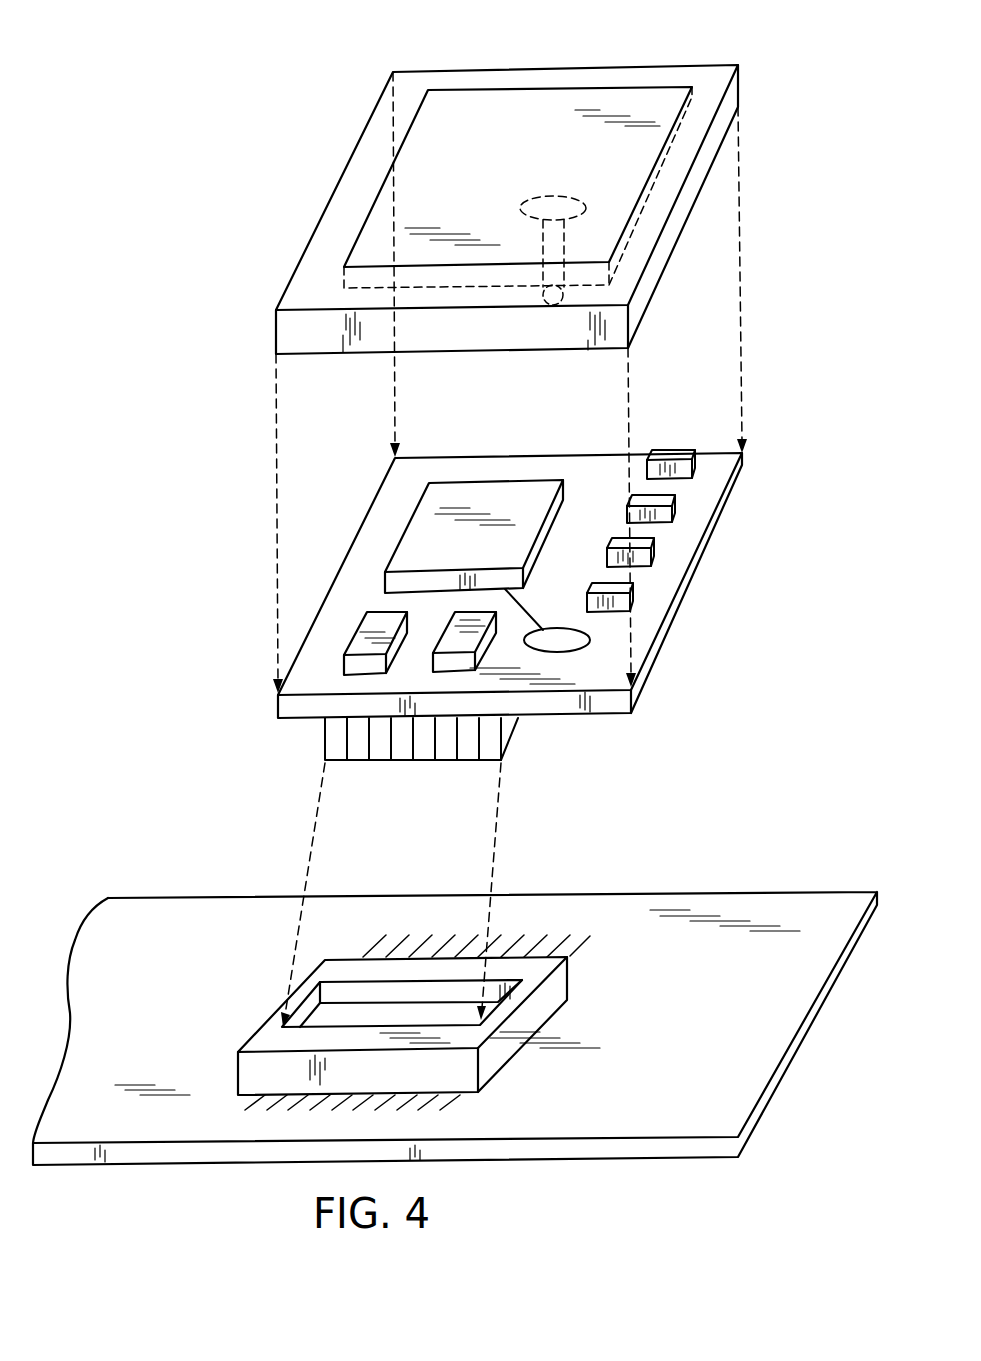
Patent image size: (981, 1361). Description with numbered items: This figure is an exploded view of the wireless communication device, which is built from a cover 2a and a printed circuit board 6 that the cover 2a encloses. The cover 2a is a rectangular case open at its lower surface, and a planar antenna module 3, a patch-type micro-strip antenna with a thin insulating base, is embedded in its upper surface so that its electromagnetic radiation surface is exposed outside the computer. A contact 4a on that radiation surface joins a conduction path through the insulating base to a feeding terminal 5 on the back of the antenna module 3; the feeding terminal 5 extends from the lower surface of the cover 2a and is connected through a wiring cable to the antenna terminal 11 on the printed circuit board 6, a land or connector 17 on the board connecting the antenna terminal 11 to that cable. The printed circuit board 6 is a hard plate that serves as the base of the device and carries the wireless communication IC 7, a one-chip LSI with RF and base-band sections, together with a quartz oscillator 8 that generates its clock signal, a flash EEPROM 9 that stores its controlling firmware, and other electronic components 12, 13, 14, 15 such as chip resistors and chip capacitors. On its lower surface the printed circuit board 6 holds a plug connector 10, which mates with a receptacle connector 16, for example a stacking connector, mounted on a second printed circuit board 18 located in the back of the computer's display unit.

The cover 2a is at (687, 65).
The planar antenna module 3 is at (368, 232).
The contact 4a is at (568, 197).
The feeding terminal 5 is at (555, 305).
The printed circuit board 6 is at (378, 527).
The wireless communication IC 7 is at (507, 488).
The quartz oscillator 8 is at (372, 622).
The flash EEPROM 9 is at (455, 627).
The connector 10 is at (415, 750).
The antenna terminal 11 is at (562, 647).
The electronic component 12 is at (633, 600).
The electronic component 13 is at (654, 555).
The electronic component 14 is at (675, 510).
The electronic component 15 is at (675, 450).
The connector 16 is at (260, 1042).
The land or connector 17 is at (527, 608).
The printed circuit board 18 is at (657, 1123).